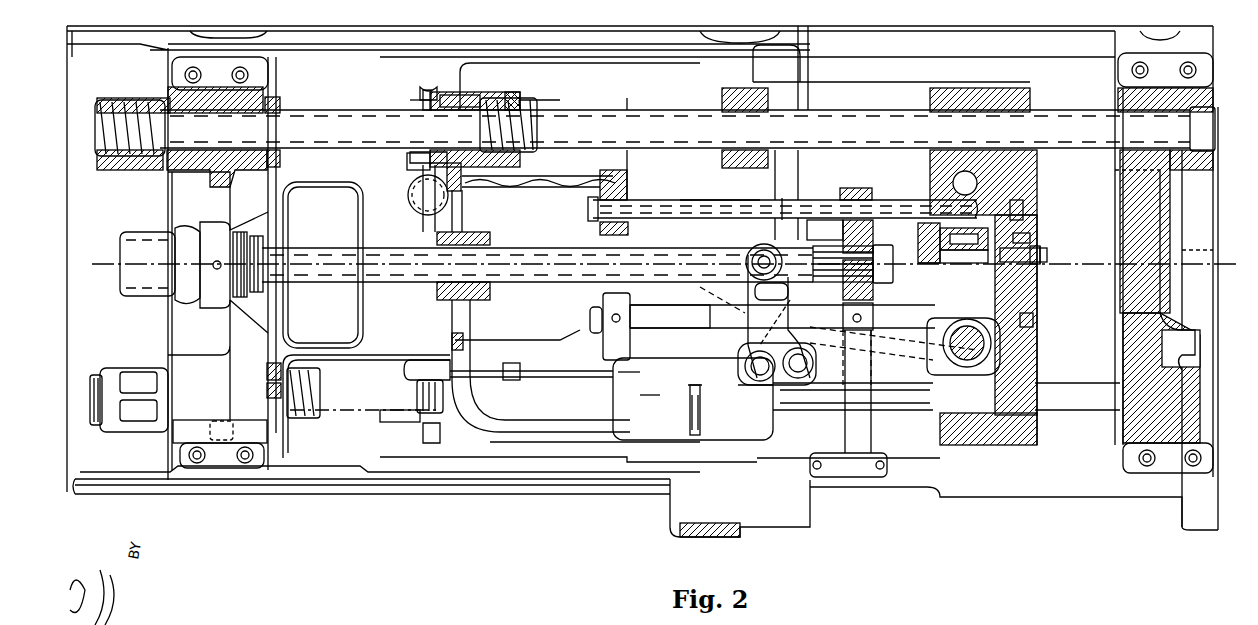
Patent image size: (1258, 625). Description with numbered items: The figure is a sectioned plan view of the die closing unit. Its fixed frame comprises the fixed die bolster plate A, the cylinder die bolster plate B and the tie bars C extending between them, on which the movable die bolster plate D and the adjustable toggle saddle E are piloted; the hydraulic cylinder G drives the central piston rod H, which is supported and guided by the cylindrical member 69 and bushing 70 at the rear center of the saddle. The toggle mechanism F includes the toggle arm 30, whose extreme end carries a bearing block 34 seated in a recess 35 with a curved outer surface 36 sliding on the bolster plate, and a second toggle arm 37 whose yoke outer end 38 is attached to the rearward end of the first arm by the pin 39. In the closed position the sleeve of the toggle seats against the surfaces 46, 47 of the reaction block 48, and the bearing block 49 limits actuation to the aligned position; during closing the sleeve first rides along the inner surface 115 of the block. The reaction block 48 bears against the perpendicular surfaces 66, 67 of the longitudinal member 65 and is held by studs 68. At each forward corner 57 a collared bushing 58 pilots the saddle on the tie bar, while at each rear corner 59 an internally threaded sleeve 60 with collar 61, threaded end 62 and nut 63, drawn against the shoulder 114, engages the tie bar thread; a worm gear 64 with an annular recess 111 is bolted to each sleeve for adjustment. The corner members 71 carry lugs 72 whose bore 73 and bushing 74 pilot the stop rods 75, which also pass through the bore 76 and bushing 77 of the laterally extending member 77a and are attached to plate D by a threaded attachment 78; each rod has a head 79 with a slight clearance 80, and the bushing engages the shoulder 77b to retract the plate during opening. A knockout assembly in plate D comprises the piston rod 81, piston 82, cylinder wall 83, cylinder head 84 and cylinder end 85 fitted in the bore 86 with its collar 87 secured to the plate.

The toggle arm 30 is at (908, 354).
The bearing block 34 is at (1033, 322).
The recess 35 is at (970, 318).
The outer surface 36 is at (1000, 350).
The second toggle arm 37 is at (755, 311).
The outer end 38 is at (790, 388).
The pin 39 is at (812, 360).
The surface 46 is at (745, 370).
The surface 47 is at (765, 388).
The reaction block 48 is at (680, 365).
The bearing block 49 is at (762, 345).
The forward corner 57 is at (726, 88).
The collared bushing 58 is at (722, 158).
The rear corner 59 is at (488, 92).
The internally threaded sleeve 60 is at (470, 92).
The collar 61 is at (450, 84).
The threaded end 62 is at (532, 101).
The nut 63 is at (515, 92).
The worm gear 64 is at (420, 92).
The longitudinal member 65 is at (407, 199).
The perpendicular surface 66 is at (645, 395).
The perpendicular surface 67 is at (620, 385).
The stud 68 is at (702, 417).
The cylindrical member 69 is at (465, 232).
The bushing 70 is at (490, 238).
The corner member 71 is at (578, 172).
The lug 72 is at (612, 240).
The longitudinal bore 73 is at (630, 190).
The bushing 74 is at (650, 200).
The stop rod 75 is at (680, 200).
The bore 76 is at (868, 200).
The bushing 77 is at (843, 235).
The laterally extending member 77a is at (875, 235).
The shoulder 77b is at (800, 190).
The threaded attachment 78 is at (953, 183).
The head 79 is at (588, 210).
The clearance 80 is at (600, 230).
The piston rod 81 is at (1040, 252).
The piston 82 is at (960, 265).
The cylinder wall 83 is at (920, 230).
The cylinder head 84 is at (925, 265).
The cylinder end 85 is at (1030, 238).
The bore 86 is at (993, 246).
The collar 87 is at (1025, 215).
The annular recess 111 is at (412, 100).
The shoulder 114 is at (520, 160).
The inner surface 115 is at (700, 372).
The fixed die bolster plate A is at (1164, 216).
The cylinder die bolster plate B is at (218, 296).
The tie bar C is at (655, 249).
The movable die bolster plate D is at (1035, 292).
The toggle saddle E is at (588, 371).
The toggle mechanism F is at (784, 364).
The hydraulic cylinder G is at (191, 265).
The central piston rod H is at (577, 264).